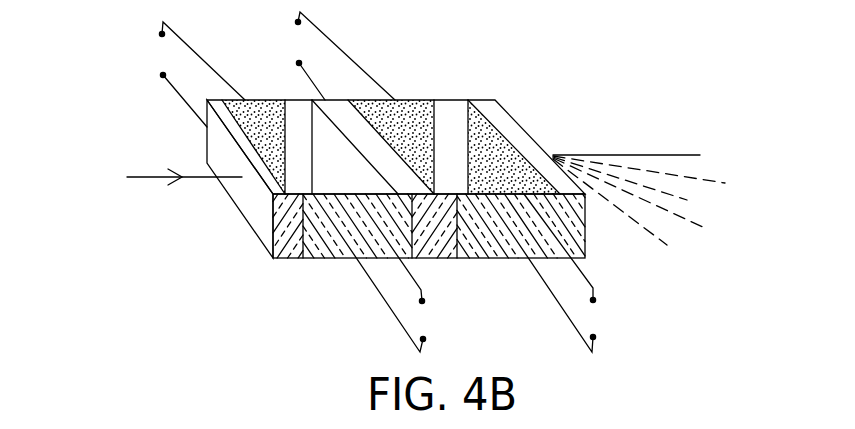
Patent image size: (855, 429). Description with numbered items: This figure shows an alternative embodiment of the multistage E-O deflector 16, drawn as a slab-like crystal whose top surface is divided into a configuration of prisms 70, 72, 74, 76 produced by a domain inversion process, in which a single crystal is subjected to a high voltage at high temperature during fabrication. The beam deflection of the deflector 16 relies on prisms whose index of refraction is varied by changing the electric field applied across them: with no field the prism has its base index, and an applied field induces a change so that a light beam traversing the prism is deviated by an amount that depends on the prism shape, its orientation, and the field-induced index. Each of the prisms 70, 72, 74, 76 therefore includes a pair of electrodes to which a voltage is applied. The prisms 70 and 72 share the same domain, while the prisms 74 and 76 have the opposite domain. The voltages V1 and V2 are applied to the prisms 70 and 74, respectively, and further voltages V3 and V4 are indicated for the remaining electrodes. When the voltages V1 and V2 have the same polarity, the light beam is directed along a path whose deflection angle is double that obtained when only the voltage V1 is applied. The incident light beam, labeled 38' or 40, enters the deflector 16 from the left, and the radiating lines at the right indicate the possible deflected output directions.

The E-O deflector 16 is at (335, 169).
The incident light beam 38' is at (132, 159).
The incident light beam 40 is at (153, 151).
The prism 70 is at (254, 99).
The prism 72 is at (413, 99).
The prism 74 is at (310, 184).
The prism 76 is at (503, 137).
The voltage V1 is at (383, 273).
The voltage V2 is at (191, 74).
The drive voltage V3 is at (554, 273).
The drive voltage V4 is at (336, 56).